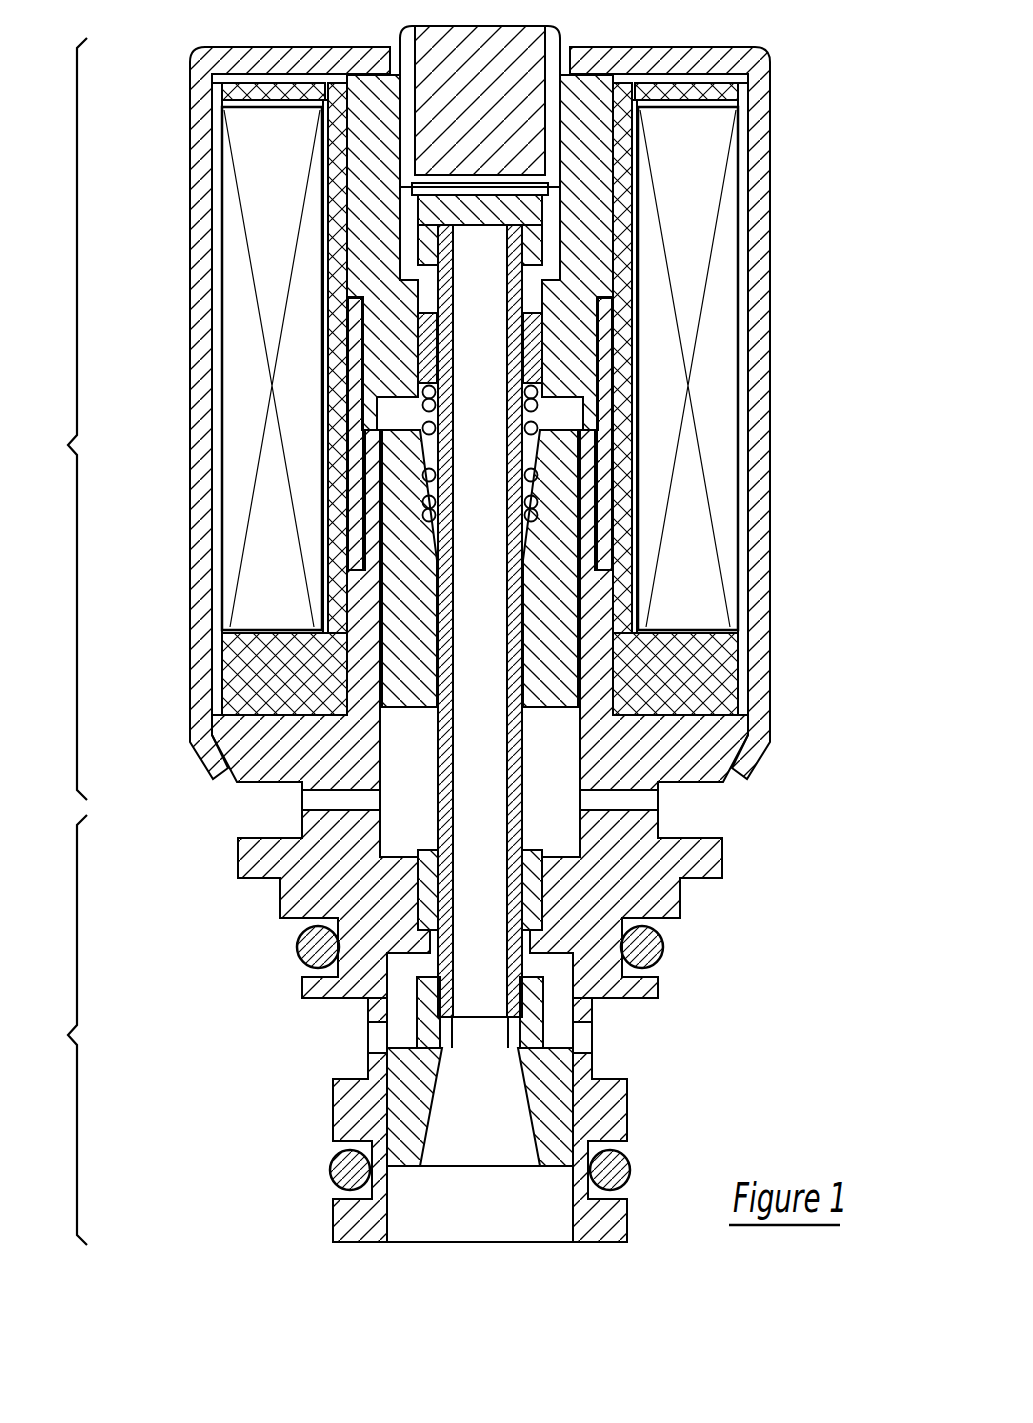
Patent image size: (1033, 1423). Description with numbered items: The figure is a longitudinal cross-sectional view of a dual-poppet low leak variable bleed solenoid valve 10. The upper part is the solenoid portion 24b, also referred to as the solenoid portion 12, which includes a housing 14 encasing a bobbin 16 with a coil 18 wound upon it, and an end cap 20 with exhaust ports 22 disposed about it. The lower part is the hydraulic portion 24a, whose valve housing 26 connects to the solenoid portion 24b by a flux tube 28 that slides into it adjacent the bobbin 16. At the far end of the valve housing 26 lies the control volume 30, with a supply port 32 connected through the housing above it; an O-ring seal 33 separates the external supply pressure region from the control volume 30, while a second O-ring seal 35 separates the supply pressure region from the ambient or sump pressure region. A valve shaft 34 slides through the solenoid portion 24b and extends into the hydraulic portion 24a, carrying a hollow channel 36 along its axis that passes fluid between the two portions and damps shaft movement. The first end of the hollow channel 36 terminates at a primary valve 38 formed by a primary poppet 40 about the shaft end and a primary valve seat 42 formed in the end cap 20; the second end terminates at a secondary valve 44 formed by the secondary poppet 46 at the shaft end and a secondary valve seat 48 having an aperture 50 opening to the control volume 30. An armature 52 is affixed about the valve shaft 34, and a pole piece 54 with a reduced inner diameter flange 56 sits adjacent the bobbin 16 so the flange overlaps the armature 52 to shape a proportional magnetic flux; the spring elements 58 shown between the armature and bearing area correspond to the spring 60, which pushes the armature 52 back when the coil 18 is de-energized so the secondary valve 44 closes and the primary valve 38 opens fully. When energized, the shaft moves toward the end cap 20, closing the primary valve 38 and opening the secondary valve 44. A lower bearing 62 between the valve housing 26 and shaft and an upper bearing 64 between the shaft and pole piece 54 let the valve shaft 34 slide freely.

The dual-poppet low leak variable bleed solenoid valve 10 is at (113, 120).
The solenoid portion 12 is at (805, 66).
The housing 14 is at (763, 131).
The bobbin 16 is at (625, 405).
The coil 18 is at (740, 512).
The end cap 20 is at (518, 48).
The exhaust ports 22 is at (552, 69).
The hydraulic portion 24a is at (56, 1030).
The solenoid portion 24b is at (57, 419).
The valve housing 26 is at (668, 907).
The flux tube 28 is at (597, 678).
The control volume 30 is at (445, 1218).
The supply port 32 is at (375, 1039).
The O-ring seal 33 is at (632, 1170).
The valve shaft 34 is at (440, 742).
The second O-ring seal 35 is at (650, 948).
The hollow channel 36 is at (472, 610).
The primary valve 38 is at (412, 193).
The primary poppet 40 is at (425, 222).
The primary valve seat 42 is at (403, 192).
The secondary valve 44 is at (560, 1036).
The secondary poppet 46 is at (432, 1017).
The secondary valve seat 48 is at (407, 1078).
The aperture 50 is at (500, 1073).
The armature 52 is at (403, 550).
The pole piece 54 is at (560, 350).
The reduced inner diameter flange 56 is at (365, 405).
The spring 58 is at (397, 477).
The spring 60 is at (620, 410).
The lower bearing 62 is at (430, 885).
The upper bearing 64 is at (430, 344).